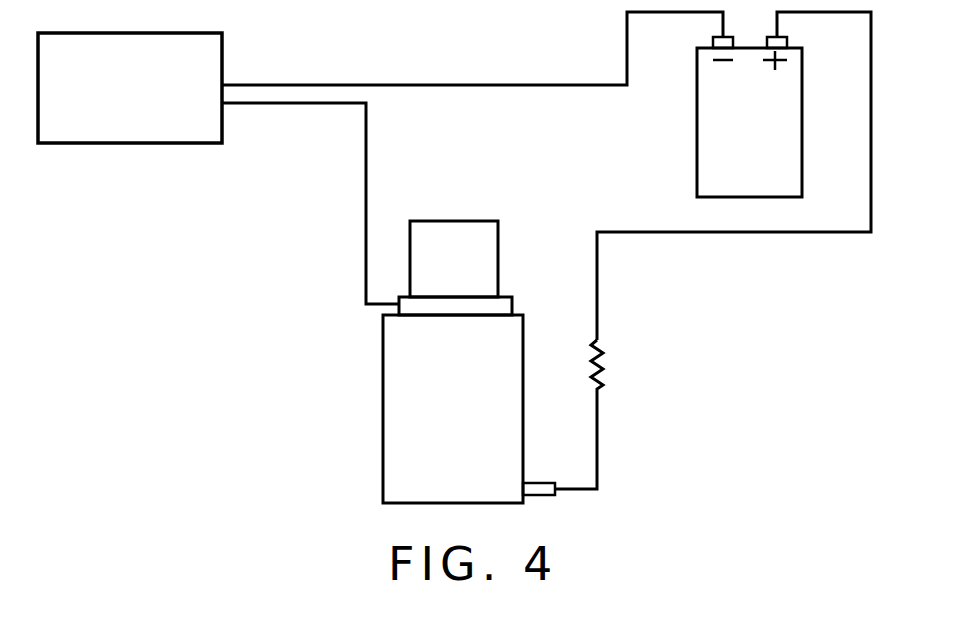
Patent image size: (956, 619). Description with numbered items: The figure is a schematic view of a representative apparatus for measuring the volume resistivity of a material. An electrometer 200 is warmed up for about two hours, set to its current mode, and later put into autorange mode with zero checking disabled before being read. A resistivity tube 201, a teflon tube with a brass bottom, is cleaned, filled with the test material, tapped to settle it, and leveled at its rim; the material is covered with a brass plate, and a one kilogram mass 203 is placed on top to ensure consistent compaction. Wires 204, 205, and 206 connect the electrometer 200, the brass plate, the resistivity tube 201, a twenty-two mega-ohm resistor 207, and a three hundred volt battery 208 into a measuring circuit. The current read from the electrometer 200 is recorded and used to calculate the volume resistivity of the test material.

The electrometer 200 is at (190, 143).
The resistivity tube 201 is at (383, 400).
The 1 kilogram mass 203 is at (437, 230).
The wire 204 is at (366, 153).
The wire 205 is at (785, 234).
The wire 206 is at (481, 87).
The 22 mega-ohm resistor 207 is at (607, 360).
The 300 volt battery 208 is at (697, 134).